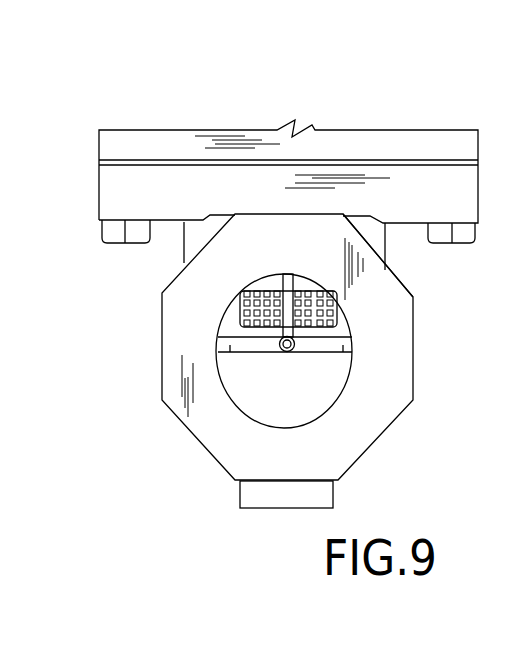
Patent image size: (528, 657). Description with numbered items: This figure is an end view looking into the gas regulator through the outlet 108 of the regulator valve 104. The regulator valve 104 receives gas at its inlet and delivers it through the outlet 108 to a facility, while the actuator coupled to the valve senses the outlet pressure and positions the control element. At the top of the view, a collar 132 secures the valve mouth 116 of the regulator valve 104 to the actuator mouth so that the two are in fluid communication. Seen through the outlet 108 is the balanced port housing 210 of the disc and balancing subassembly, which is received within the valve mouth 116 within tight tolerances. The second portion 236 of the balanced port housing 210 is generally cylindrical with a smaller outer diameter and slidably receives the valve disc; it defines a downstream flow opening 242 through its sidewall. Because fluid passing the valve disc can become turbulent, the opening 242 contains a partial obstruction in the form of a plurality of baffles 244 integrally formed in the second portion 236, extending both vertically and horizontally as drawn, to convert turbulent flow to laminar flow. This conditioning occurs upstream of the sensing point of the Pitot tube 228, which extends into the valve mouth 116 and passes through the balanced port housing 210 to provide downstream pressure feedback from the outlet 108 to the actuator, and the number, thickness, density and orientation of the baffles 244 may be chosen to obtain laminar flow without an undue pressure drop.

The regulator valve 104 is at (413, 402).
The outlet 108 is at (267, 409).
The valve mouth 116 is at (383, 238).
The collar 132 is at (431, 147).
The balanced port housing 210 is at (183, 310).
The second portion 236 is at (235, 330).
The Pitot tube 228 is at (280, 337).
The downstream flow opening 242 is at (238, 303).
The baffles 244 is at (328, 297).